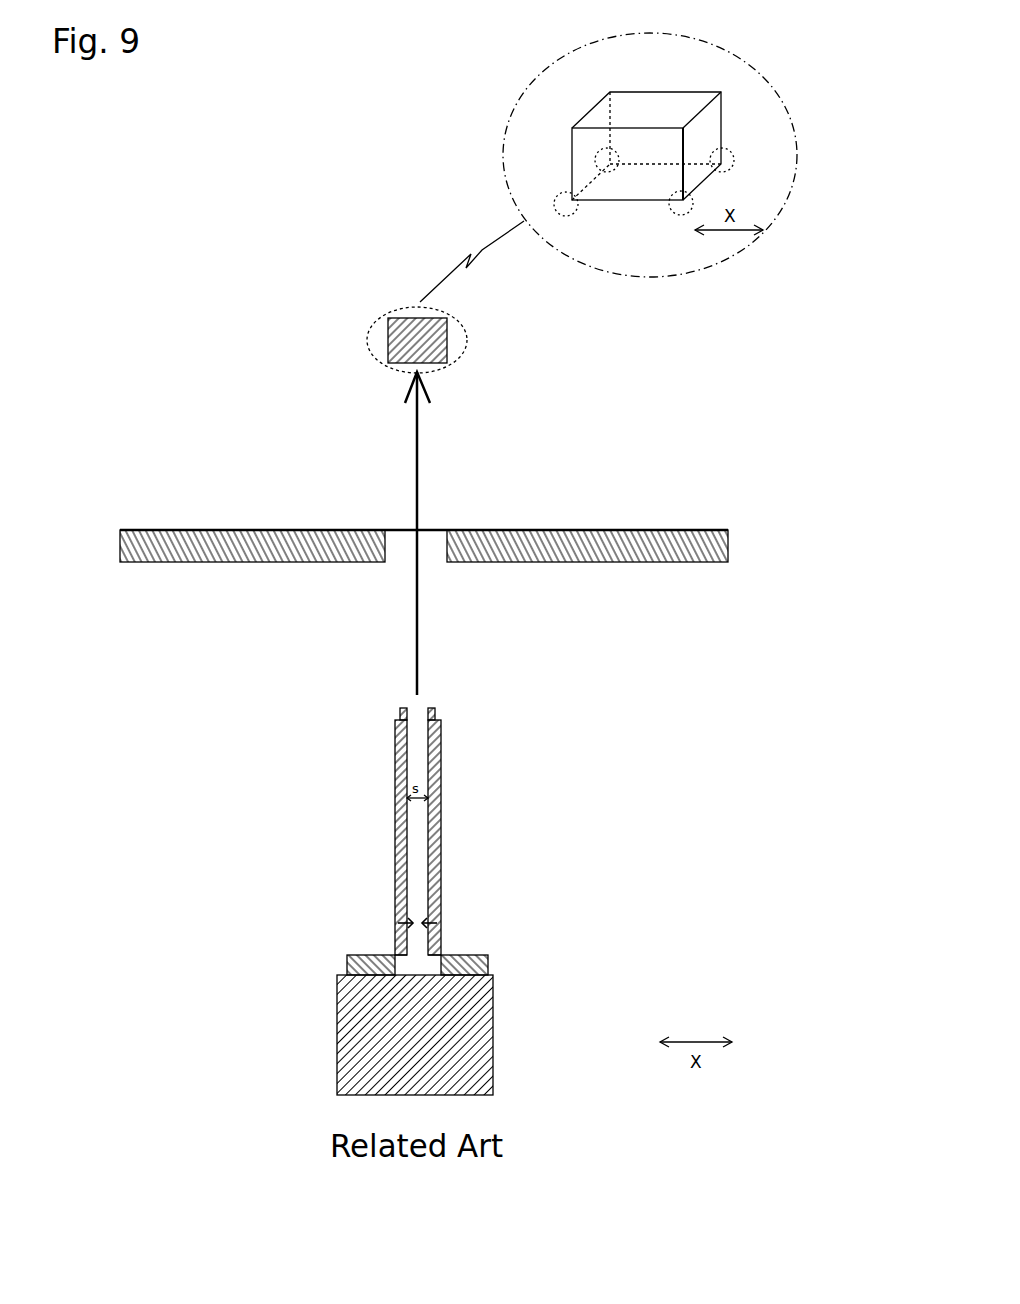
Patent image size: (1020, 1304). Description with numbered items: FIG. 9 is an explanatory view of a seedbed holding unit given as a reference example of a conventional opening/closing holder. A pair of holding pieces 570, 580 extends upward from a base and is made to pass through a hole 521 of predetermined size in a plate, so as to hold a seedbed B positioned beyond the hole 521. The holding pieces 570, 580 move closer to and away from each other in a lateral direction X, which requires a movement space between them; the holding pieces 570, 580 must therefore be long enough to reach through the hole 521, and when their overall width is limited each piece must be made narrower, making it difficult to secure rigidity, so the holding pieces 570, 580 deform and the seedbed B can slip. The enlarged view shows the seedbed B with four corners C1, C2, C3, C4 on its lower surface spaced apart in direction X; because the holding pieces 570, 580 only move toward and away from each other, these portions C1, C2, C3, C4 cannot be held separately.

The seedbed B is at (647, 110).
The corner of the seedbed C1 is at (568, 198).
The corner of the seedbed C2 is at (676, 203).
The corner of the seedbed C3 is at (603, 157).
The corner of the seedbed C4 is at (727, 158).
The hole 521 is at (430, 545).
The holding piece 570 is at (433, 865).
The holding piece 580 is at (402, 868).